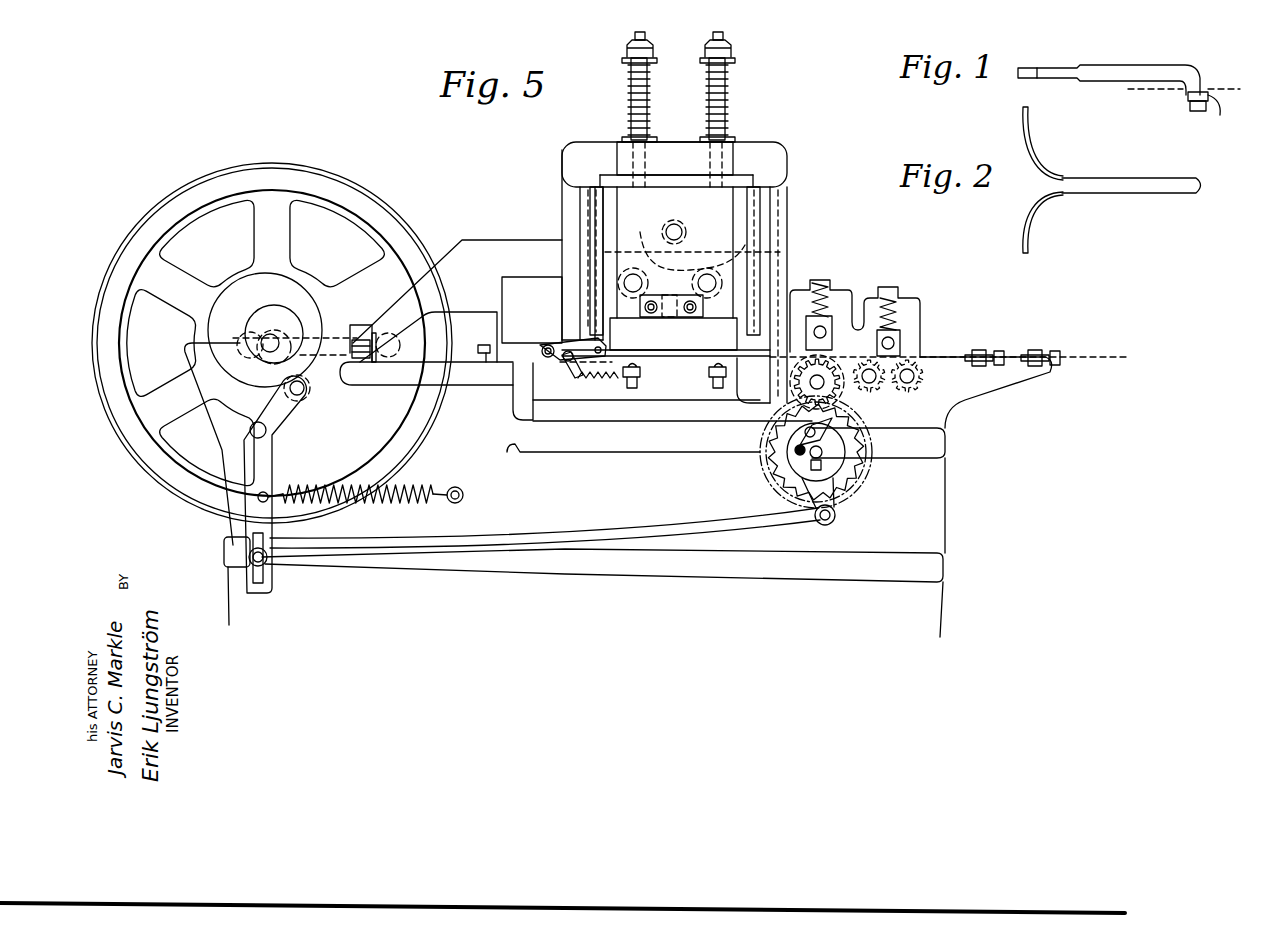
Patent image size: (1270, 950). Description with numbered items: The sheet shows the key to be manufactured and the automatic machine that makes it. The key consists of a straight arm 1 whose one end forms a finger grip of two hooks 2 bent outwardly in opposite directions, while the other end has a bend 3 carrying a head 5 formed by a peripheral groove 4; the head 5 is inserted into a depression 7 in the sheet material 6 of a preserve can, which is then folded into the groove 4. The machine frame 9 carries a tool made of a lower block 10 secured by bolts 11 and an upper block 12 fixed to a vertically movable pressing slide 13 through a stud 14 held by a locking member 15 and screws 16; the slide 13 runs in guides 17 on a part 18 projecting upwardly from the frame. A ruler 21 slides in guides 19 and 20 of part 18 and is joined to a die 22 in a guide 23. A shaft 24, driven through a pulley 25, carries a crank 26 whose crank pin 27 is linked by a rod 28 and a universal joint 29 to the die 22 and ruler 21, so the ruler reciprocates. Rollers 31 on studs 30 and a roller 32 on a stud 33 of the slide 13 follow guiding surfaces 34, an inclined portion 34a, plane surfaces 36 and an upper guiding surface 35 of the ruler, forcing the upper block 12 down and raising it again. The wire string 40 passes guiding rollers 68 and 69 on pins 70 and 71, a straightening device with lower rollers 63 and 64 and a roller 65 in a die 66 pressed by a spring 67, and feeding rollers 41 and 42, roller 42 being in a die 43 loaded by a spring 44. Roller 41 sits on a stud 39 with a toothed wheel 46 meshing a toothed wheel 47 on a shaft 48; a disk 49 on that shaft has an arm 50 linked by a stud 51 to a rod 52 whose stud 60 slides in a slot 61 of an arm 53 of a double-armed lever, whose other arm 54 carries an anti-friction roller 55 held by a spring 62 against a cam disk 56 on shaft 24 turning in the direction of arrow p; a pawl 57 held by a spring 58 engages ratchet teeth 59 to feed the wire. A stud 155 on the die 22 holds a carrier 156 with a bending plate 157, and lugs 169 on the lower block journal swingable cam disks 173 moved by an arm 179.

In FIG. 1, the straight arm 1 is at (1128, 65).
In FIG. 2, the straight arm 1 is at (1120, 178).
In FIG. 1, the hooks 2 is at (1052, 68).
In FIG. 2, the hooks 2 is at (1033, 140).
In FIG. 1, the bend 3 is at (1205, 75).
In FIG. 2, the bend 3 is at (1203, 180).
In FIG. 1, the groove 4 is at (1218, 113).
In FIG. 1, the head 5 is at (1197, 112).
In FIG. 1, the sheet material of the preserve can 6 is at (1150, 96).
In FIG. 1, the depression 7 is at (1189, 108).
In FIG. 5, the frame 9 is at (930, 488).
In FIG. 5, the lower block 10 is at (680, 375).
In FIG. 5, the bolts 11 is at (632, 390).
In FIG. 5, the upper block 12 is at (673, 334).
In FIG. 5, the pressing slide 13 is at (740, 220).
In FIG. 5, the stud 14 is at (708, 291).
In FIG. 5, the locking member 15 is at (641, 304).
In FIG. 5, the screws 16 is at (651, 313).
In FIG. 5, the guides 17 is at (598, 200).
In FIG. 5, the part 18 is at (780, 152).
In FIG. 5, the guide 19 is at (762, 240).
In FIG. 5, the guide 20 is at (567, 230).
In FIG. 5, the ruler 21 is at (512, 255).
In FIG. 5, the die 22 is at (445, 277).
In FIG. 5, the guide 23 is at (455, 350).
In FIG. 5, the shaft 24 is at (270, 350).
In FIG. 5, the pulley 25 is at (322, 195).
In FIG. 5, the crank 26 is at (278, 332).
In FIG. 5, the bearing 27 is at (245, 350).
In FIG. 5, the rod 28 is at (349, 368).
In FIG. 5, the universal joint 29 is at (392, 354).
In FIG. 5, the studs 30 is at (720, 262).
In FIG. 5, the rollers 31 is at (716, 280).
In FIG. 5, the roller 32 is at (668, 225).
In FIG. 5, the stud 33 is at (681, 225).
In FIG. 5, the guiding surfaces 34 is at (612, 262).
In FIG. 5, the inclined portion 34a is at (692, 251).
In FIG. 5, the guiding surface 35 is at (646, 250).
In FIG. 5, the plane surfaces 36 is at (640, 262).
In FIG. 5, the stud 39 is at (810, 383).
In FIG. 5, the wire string 40 is at (1092, 358).
In FIG. 5, the feeding roller 41 is at (863, 387).
In FIG. 5, the feeding roller 42 is at (826, 332).
In FIG. 5, the die 43 is at (827, 328).
In FIG. 5, the spring 44 is at (815, 285).
In FIG. 5, the toothed wheel 46 is at (798, 372).
In FIG. 5, the toothed wheel 47 is at (870, 452).
In FIG. 5, the shaft 48 is at (825, 456).
In FIG. 5, the disk 49 is at (800, 468).
In FIG. 5, the arm 50 is at (835, 498).
In FIG. 5, the stud 51 is at (824, 527).
In FIG. 5, the rod 52 is at (655, 516).
In FIG. 5, the arm of double-armed lever 53 is at (255, 515).
In FIG. 5, the arm of double-armed lever 54 is at (283, 420).
In FIG. 5, the anti-friction roller 55 is at (305, 396).
In FIG. 5, the cam disk 56 is at (305, 322).
In FIG. 5, the pawl 57 is at (800, 432).
In FIG. 5, the spring 58 is at (798, 448).
In FIG. 5, the ratchet teeth 59 is at (860, 440).
In FIG. 5, the stud 60 is at (266, 568).
In FIG. 5, the slot 61 is at (265, 545).
In FIG. 5, the spring 62 is at (380, 484).
In FIG. 5, the lower roller 63 is at (901, 387).
In FIG. 5, the lower roller 64 is at (924, 386).
In FIG. 5, the roller 65 is at (905, 345).
In FIG. 5, the die 66 is at (897, 340).
In FIG. 5, the spring 67 is at (895, 300).
In FIG. 5, the guiding roller 68 is at (996, 352).
In FIG. 5, the guiding roller 69 is at (1052, 352).
In FIG. 5, the pin 70 is at (978, 352).
In FIG. 5, the pin 71 is at (1032, 352).
In FIG. 5, the stud 155 is at (486, 357).
In FIG. 5, the carrier 156 is at (525, 352).
In FIG. 5, the bending plate 157 is at (566, 367).
In FIG. 5, the lugs 169 is at (600, 384).
In FIG. 5, the cam disks 173 is at (548, 345).
In FIG. 5, the arm 179 is at (586, 376).
In FIG. 5, the arrow p is at (322, 362).